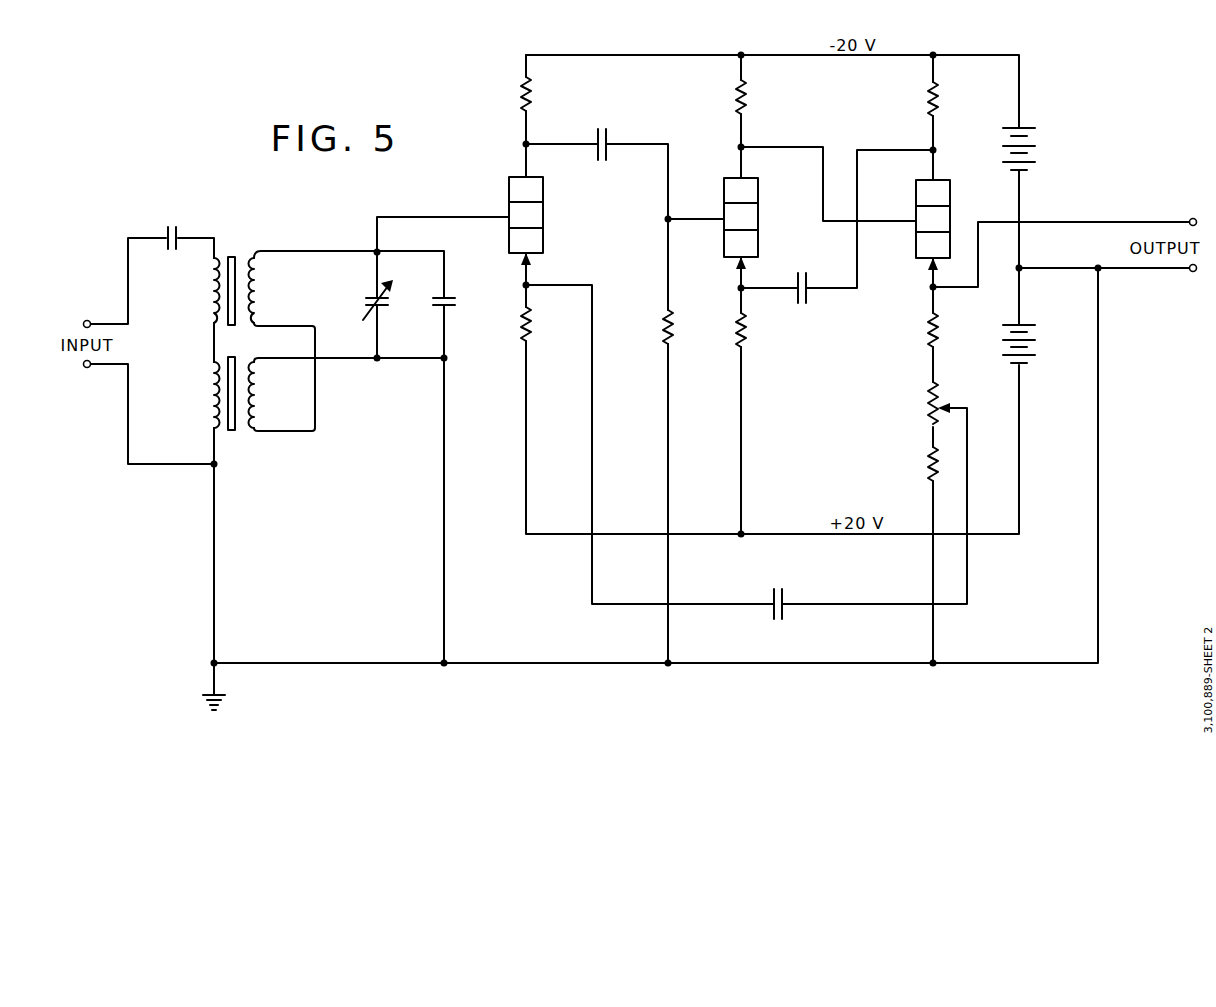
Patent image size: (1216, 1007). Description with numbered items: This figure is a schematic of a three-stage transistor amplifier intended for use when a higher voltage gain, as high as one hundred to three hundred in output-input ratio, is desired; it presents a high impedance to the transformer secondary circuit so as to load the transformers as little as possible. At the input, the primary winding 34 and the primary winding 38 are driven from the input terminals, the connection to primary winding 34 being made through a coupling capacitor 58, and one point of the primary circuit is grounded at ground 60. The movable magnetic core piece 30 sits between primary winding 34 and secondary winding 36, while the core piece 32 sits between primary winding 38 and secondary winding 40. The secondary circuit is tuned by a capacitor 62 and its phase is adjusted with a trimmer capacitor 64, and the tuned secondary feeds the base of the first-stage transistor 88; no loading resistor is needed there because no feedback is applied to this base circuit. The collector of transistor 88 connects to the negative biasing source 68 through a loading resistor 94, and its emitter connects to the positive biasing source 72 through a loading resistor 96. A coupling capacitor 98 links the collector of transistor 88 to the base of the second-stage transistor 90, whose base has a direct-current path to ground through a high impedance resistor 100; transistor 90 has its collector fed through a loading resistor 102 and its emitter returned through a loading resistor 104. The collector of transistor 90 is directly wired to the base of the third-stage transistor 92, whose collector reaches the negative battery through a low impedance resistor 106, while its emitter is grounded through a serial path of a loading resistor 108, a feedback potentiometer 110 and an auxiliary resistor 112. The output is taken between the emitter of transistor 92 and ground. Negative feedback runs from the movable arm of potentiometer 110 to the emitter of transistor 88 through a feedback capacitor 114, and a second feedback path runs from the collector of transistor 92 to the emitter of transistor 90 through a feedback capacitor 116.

The movable magnetic core piece 30 is at (233, 254).
The movable magnetic core piece 32 is at (233, 432).
The primary winding 34 is at (212, 292).
The secondary winding 36 is at (258, 297).
The primary winding 38 is at (213, 391).
The secondary winding 40 is at (258, 393).
The coupling capacitor 58 is at (172, 224).
The ground 60 is at (208, 694).
The capacitor 62 is at (458, 303).
The trimmer capacitor 64 is at (370, 300).
The negative biasing source 68 is at (1037, 158).
The positive biasing source 72 is at (1037, 349).
The transistor 88 is at (508, 191).
The transistor 90 is at (759, 196).
The transistor 92 is at (944, 178).
The loading resistor 94 is at (520, 93).
The loading resistor 96 is at (517, 324).
The coupling capacitor 98 is at (604, 128).
The high impedance resistor 100 is at (660, 332).
The loading resistor 102 is at (746, 103).
The loading resistor 104 is at (746, 337).
The low impedance resistor 106 is at (928, 97).
The loading resistor 108 is at (925, 338).
The feedback potentiometer 110 is at (925, 405).
The auxiliary resistor 112 is at (925, 465).
The feedback capacitor 114 is at (776, 618).
The feedback capacitor 116 is at (802, 274).